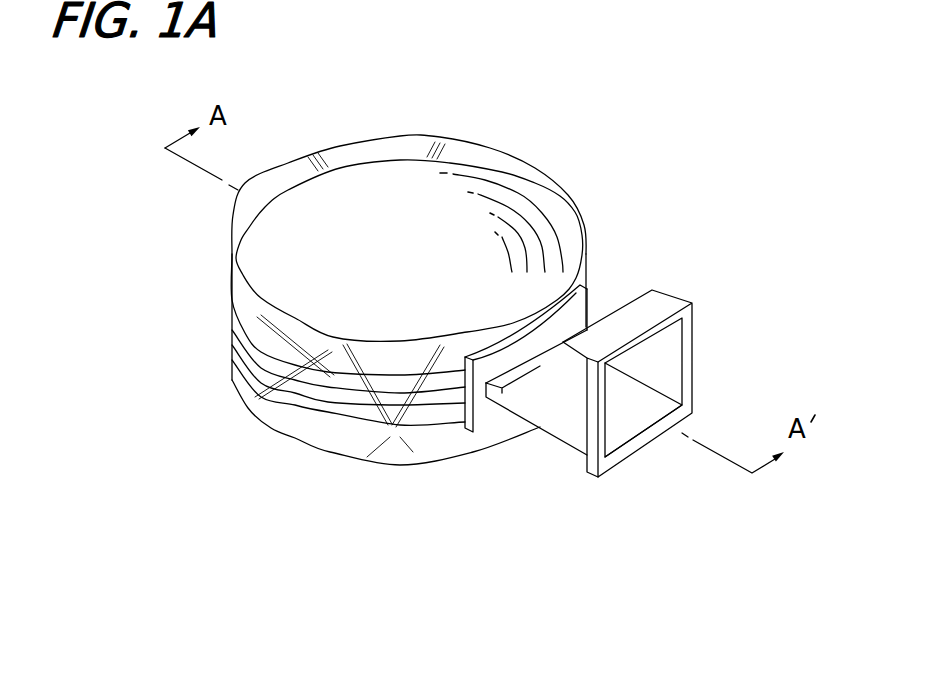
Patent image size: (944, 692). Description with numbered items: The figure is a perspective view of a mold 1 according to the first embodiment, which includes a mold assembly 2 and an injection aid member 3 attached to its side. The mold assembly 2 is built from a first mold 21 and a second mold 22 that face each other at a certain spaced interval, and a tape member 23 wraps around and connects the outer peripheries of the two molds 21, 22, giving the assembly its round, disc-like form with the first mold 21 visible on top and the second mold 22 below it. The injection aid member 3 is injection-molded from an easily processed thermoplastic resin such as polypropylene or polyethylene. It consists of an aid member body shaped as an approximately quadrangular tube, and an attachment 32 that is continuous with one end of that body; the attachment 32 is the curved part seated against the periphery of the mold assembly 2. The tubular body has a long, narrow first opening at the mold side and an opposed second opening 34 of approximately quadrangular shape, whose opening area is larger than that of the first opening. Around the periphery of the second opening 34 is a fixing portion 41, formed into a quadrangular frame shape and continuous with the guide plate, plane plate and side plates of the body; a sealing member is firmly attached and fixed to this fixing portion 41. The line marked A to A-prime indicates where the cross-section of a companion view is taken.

The mold 1 is at (578, 116).
The mold assembly 2 is at (342, 484).
The first mold 21 is at (283, 273).
The second mold 22 is at (312, 398).
The tape member 23 is at (383, 134).
The injection aid member 3 is at (548, 457).
The attachment 32 is at (484, 413).
The second opening 34 is at (622, 440).
The fixing portion 41 is at (691, 357).